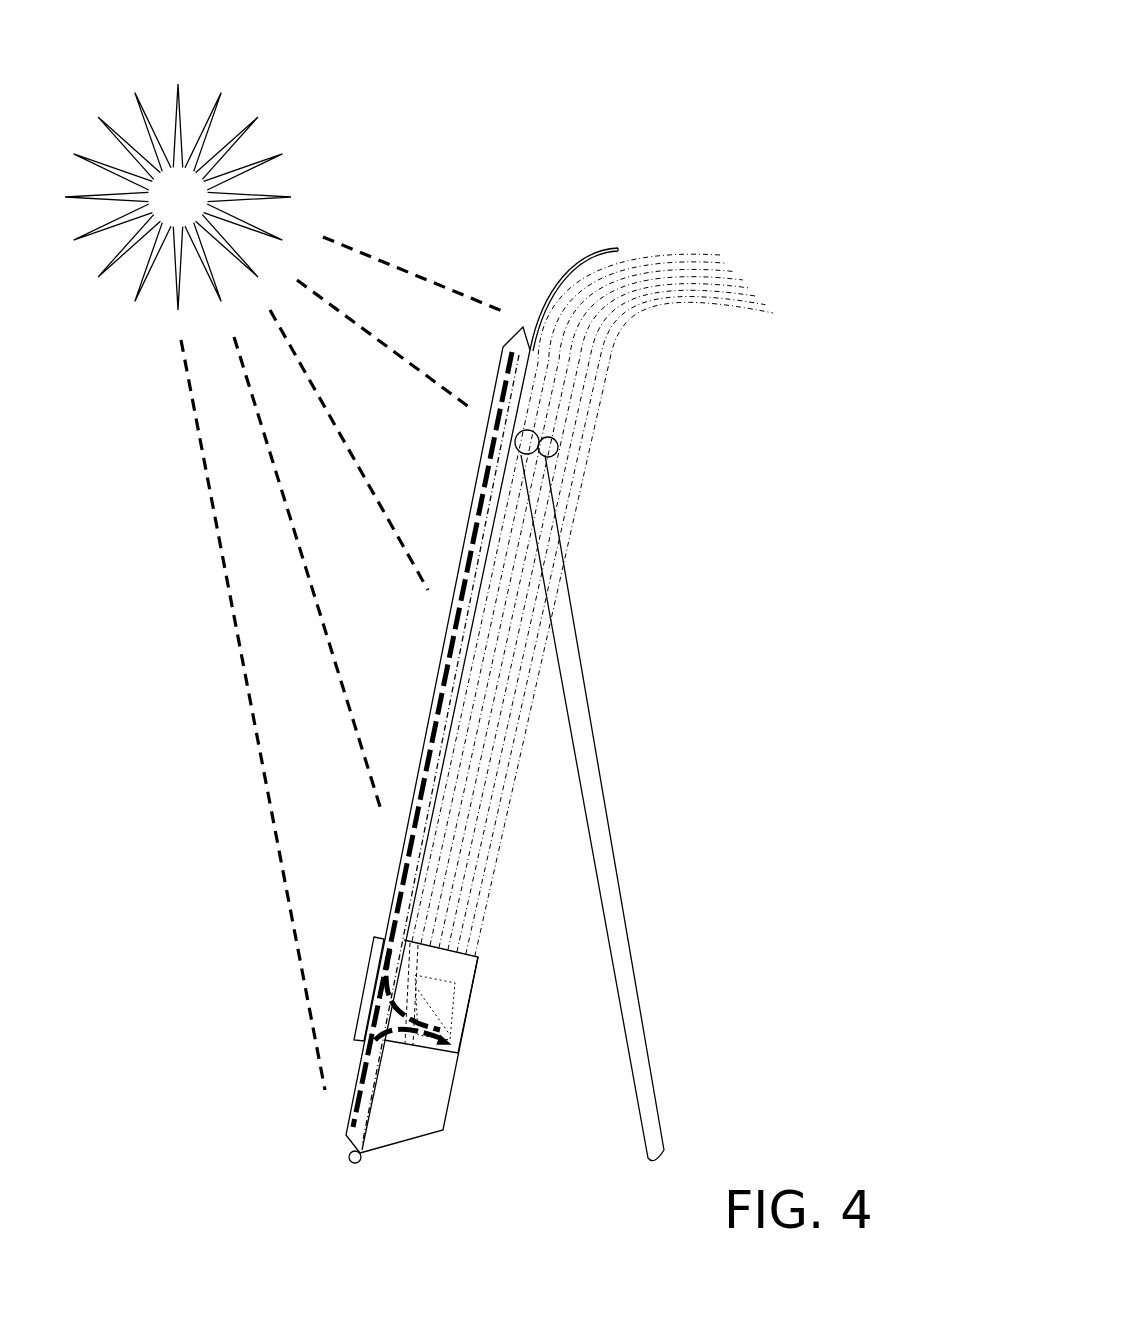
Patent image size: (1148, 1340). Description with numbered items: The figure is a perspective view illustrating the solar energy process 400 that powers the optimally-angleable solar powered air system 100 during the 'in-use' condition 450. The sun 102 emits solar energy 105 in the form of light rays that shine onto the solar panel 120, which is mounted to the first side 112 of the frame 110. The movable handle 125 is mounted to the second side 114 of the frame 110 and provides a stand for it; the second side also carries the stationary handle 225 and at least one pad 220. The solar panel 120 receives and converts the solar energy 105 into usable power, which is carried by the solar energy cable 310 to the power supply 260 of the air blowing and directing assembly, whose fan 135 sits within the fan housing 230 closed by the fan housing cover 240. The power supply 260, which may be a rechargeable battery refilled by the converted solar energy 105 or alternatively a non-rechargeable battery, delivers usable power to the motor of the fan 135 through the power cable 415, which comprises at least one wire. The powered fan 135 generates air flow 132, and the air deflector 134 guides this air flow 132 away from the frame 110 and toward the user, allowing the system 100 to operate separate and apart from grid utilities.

The optimally-angleable solar powered air system 100 is at (628, 88).
The solar energy process 400 is at (674, 130).
The 'in-use' condition 450 is at (702, 166).
The sun 102 is at (163, 208).
The solar energy 105 is at (262, 750).
The frame 110 is at (437, 682).
The first side 112 is at (402, 848).
The second side 114 is at (428, 853).
The air deflector 134 is at (565, 266).
The air flow 132 is at (683, 320).
The stationary handle 225 is at (556, 455).
The movable handle 125 is at (565, 585).
The solar panel 120 is at (368, 987).
The solar energy cable 310 is at (382, 967).
The fan housing 230 is at (442, 946).
The fan 135 is at (462, 978).
The power supply 260 is at (458, 1025).
The power cable 415 is at (447, 1045).
The fan housing cover 240 is at (453, 1113).
The pad 220 is at (344, 1160).